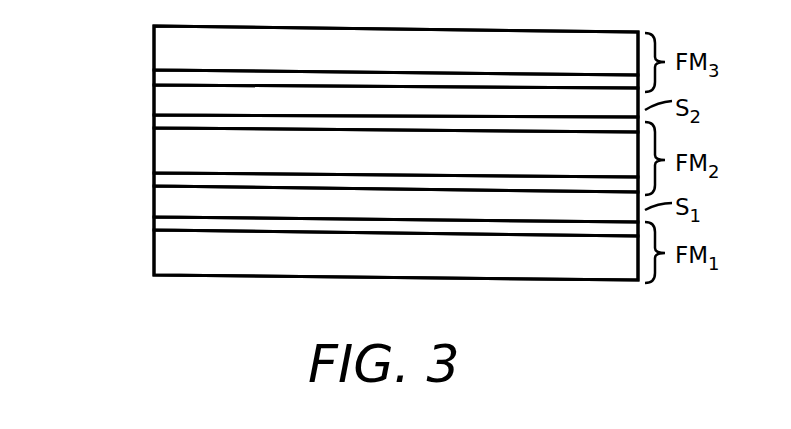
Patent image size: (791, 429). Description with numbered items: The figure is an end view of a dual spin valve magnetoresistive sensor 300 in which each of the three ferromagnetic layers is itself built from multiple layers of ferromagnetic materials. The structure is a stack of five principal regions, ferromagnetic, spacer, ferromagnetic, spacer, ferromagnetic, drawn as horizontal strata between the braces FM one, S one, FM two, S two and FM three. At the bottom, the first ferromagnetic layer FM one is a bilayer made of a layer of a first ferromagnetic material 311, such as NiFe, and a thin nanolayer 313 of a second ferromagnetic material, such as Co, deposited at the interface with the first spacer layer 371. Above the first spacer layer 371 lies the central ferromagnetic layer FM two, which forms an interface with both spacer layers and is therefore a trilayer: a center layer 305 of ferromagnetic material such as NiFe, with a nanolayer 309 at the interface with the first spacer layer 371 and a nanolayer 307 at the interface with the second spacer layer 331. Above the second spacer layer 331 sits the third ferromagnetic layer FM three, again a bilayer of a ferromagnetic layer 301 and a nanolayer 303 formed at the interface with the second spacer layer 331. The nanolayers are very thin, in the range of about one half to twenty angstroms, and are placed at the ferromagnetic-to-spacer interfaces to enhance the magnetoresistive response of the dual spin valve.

The magnetoresistive multilayer structure 300 is at (554, 330).
The layer of first ferromagnetic material 301 is at (154, 42).
The nanolayer 303 is at (154, 75).
The second spacer layer 331 is at (154, 102).
The nanolayer 307 is at (154, 123).
The center layer 305 is at (154, 158).
The nanolayer 309 is at (154, 180).
The first spacer layer 371 is at (154, 211).
The nanolayer 313 is at (154, 223).
The layer of first ferromagnetic material 311 is at (154, 253).